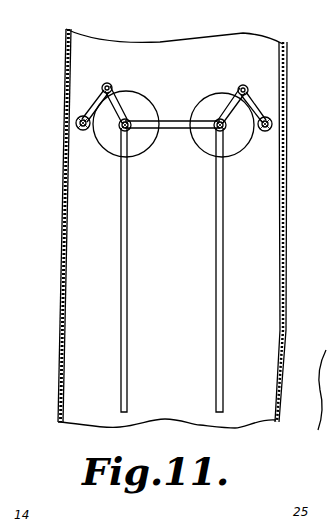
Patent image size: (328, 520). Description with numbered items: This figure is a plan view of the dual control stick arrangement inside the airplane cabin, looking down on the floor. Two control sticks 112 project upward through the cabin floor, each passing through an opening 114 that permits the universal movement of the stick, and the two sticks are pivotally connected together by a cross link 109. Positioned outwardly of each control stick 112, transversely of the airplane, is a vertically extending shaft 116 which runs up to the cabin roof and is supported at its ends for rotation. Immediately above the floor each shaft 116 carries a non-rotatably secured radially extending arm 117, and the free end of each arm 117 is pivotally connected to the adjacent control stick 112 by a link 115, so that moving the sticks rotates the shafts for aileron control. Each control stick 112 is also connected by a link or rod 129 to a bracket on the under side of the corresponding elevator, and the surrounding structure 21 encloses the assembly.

The tube wall 21 is at (287, 178).
The cross link 109 is at (172, 129).
The control stick 112 is at (134, 116).
The opening 114 is at (118, 152).
The link 115 is at (117, 102).
The vertically extending shaft 116 is at (76, 123).
The radially extending arm 117 is at (102, 100).
The link or rod 129 is at (212, 260).